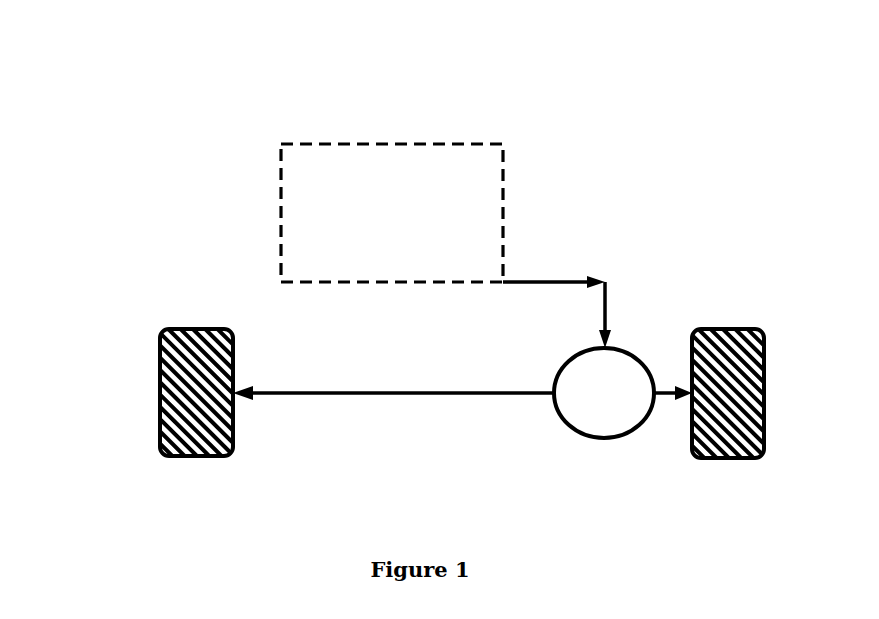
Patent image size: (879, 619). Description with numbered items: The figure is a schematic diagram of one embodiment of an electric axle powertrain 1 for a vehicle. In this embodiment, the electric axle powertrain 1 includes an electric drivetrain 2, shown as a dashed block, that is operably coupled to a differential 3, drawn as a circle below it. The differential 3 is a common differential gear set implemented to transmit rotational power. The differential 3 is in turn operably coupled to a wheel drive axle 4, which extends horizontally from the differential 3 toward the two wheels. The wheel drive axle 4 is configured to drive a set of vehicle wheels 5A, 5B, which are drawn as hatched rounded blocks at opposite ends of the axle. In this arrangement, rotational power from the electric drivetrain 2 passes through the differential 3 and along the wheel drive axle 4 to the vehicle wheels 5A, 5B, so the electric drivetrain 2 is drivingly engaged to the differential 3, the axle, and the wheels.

The electric axle powertrain 1 is at (120, 82).
The electric drivetrain 2 is at (326, 143).
The differential 3 is at (568, 430).
The wheel drive axle 4 is at (315, 393).
The vehicle wheel 5A is at (187, 329).
The vehicle wheel 5B is at (710, 329).